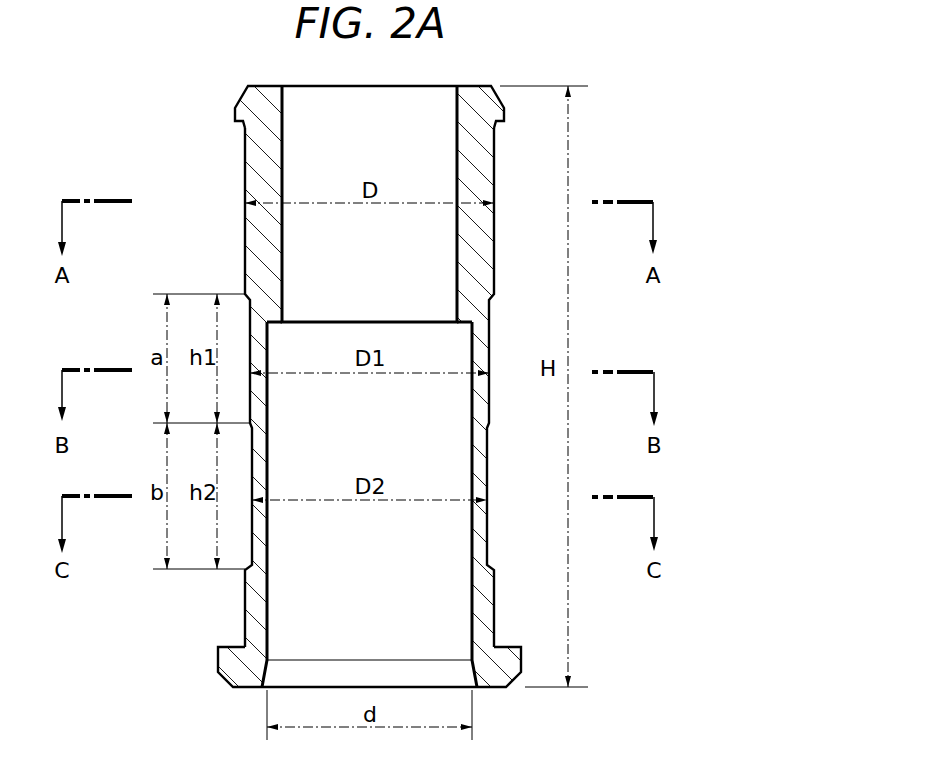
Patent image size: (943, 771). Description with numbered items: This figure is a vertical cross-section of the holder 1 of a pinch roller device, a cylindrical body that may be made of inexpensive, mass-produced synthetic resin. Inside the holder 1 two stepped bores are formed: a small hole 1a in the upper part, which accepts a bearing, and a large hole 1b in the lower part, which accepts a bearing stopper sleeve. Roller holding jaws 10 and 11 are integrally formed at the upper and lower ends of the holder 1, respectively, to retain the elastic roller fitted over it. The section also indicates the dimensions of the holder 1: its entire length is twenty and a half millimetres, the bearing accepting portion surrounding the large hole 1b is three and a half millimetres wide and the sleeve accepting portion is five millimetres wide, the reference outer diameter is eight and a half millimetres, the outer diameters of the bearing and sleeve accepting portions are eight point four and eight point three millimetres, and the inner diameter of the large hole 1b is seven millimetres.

The holder 1 is at (212, 109).
The roller holding jaw 10 is at (236, 122).
The small hole 1a is at (300, 175).
The large hole 1b is at (320, 608).
The roller holding jaw 11 is at (218, 658).